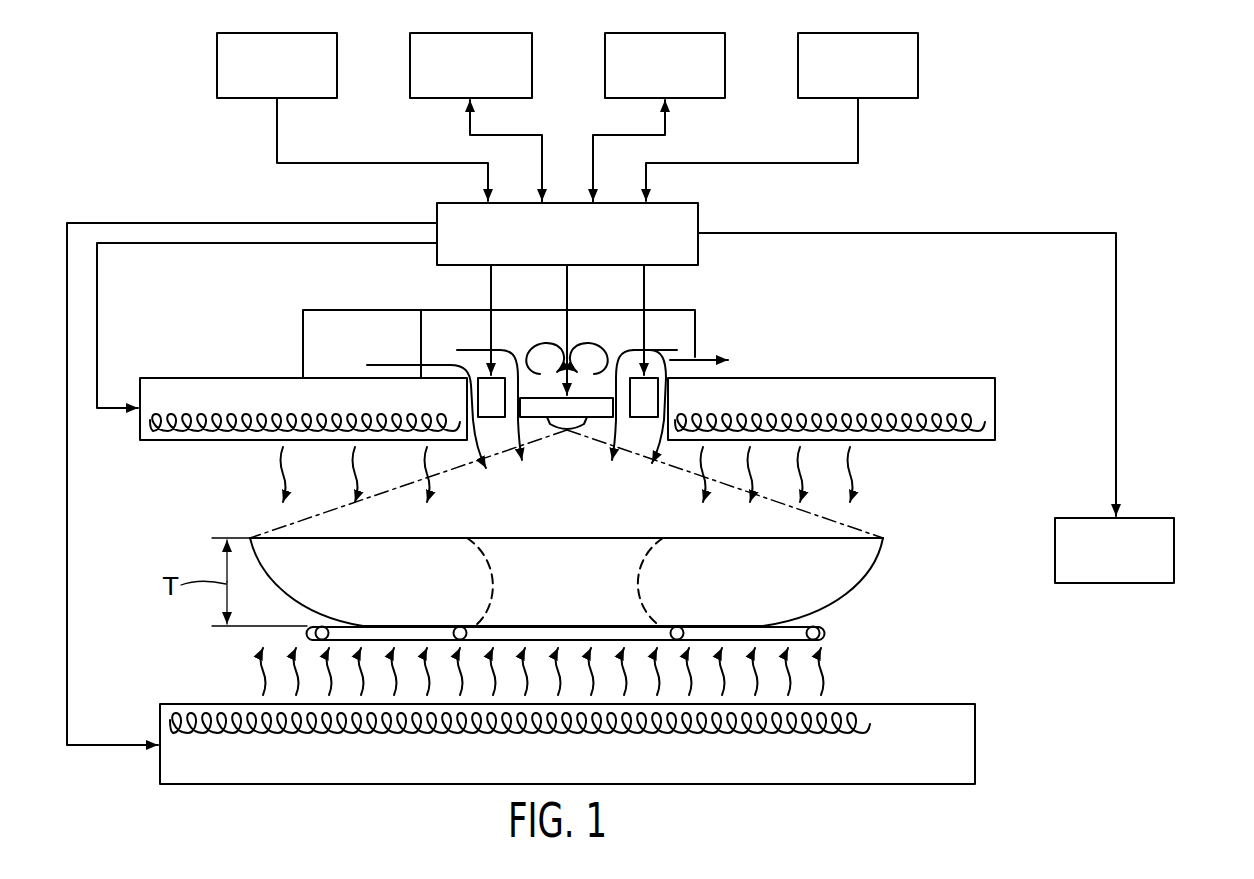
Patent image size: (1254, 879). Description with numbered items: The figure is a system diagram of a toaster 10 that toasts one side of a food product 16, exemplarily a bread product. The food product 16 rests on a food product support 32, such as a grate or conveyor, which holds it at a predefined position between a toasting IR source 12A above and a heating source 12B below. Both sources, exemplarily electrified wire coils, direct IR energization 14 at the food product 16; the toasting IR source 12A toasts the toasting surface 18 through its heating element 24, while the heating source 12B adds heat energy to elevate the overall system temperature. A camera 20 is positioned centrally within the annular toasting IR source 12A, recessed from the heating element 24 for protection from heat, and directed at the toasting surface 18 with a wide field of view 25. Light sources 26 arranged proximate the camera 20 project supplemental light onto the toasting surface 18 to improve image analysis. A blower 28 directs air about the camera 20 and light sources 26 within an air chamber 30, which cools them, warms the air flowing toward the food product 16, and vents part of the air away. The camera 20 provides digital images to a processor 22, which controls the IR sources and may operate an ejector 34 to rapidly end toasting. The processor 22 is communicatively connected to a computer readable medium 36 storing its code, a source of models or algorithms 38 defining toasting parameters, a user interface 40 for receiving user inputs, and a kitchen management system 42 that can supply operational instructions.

The toaster 10 is at (981, 170).
The toasting IR source 12A is at (577, 382).
The heating source 12B is at (975, 742).
The IR energization 14 is at (879, 478).
The food product 16 is at (872, 560).
The toasting surface 18 is at (302, 534).
The camera 20 is at (567, 433).
The processor 22 is at (700, 213).
The heating element 24 is at (282, 425).
The field of view 25 is at (325, 512).
The light sources 26 is at (492, 418).
The blower 28 is at (361, 310).
The air chamber 30 is at (681, 310).
The food product support 32 is at (822, 633).
The ejector 34 is at (1175, 552).
The computer readable medium (CRM) 36 is at (278, 33).
The source of models or algorithms 38 is at (472, 33).
The user interface 40 is at (665, 33).
The kitchen management system (KMS) 42 is at (859, 33).